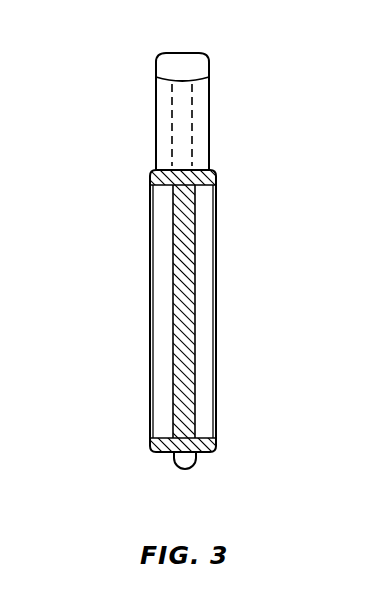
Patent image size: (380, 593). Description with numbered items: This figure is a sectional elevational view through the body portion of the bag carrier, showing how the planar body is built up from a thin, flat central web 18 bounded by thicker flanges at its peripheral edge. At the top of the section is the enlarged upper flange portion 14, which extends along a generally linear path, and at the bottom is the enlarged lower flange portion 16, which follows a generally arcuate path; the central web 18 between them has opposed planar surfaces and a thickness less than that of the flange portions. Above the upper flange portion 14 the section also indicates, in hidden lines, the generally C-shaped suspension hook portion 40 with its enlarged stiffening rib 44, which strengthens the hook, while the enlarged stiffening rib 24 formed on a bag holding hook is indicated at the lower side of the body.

The enlarged stiffening rib 44 is at (200, 65).
The suspension hook portion 40 is at (201, 136).
The upper flange portion 14 is at (148, 175).
The central web 18 is at (193, 358).
The enlarged stiffening rib 24 is at (218, 425).
The lower flange portion 16 is at (156, 447).